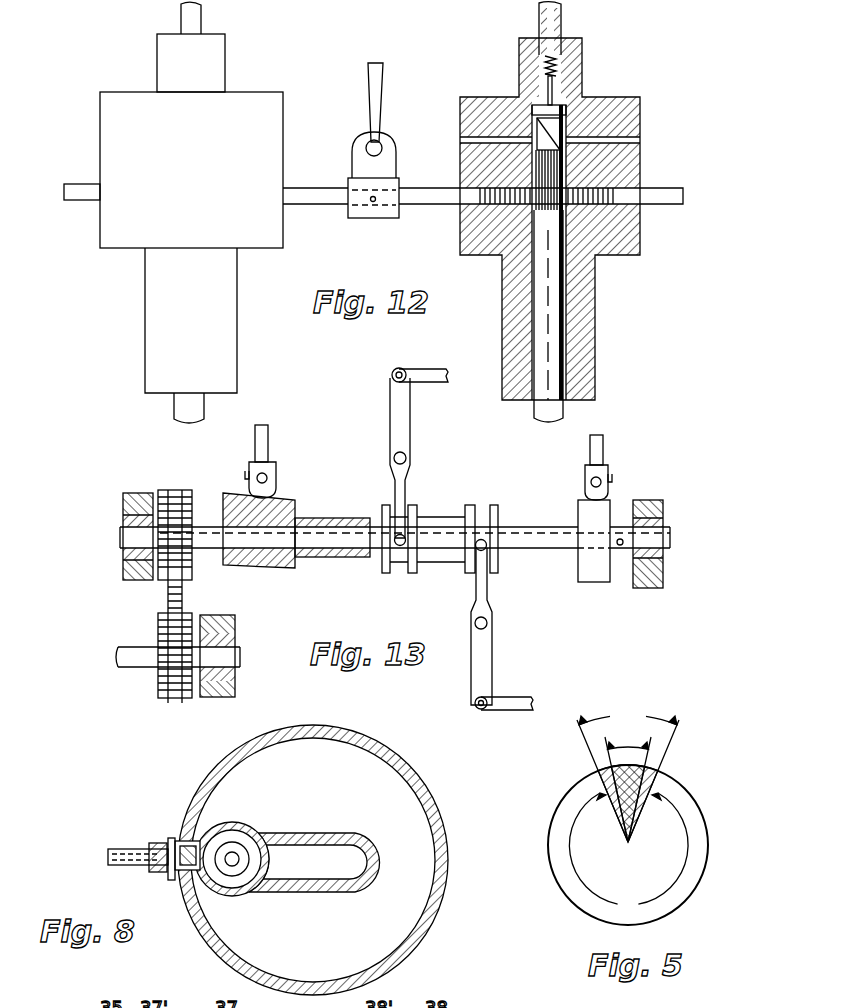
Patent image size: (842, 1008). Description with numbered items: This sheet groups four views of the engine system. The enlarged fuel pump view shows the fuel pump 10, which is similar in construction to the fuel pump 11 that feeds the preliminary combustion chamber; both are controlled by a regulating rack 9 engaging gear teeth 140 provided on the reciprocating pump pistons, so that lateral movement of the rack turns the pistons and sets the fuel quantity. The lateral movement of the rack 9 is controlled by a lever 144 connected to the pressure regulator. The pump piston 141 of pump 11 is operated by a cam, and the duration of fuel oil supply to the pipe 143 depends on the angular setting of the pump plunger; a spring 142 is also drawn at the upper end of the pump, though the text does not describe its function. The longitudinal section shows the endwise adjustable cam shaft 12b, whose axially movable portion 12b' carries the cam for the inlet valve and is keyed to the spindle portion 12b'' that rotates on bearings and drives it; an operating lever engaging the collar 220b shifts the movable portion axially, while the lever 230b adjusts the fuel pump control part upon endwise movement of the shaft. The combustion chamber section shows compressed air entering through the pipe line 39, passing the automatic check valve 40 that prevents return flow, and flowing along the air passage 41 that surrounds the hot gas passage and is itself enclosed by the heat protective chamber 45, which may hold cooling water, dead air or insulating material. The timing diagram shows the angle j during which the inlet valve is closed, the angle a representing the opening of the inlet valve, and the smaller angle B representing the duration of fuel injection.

In FIG. 12, the fuel pump 10 is at (253, 107).
In FIG. 12, the regulating rack 9 is at (320, 200).
In FIG. 12, the lever 144 is at (435, 82).
In FIG. 12, the pipe 143 is at (562, 22).
In FIG. 12, the spring 142 is at (576, 70).
In FIG. 12, the fuel pump 11 is at (641, 110).
In FIG. 12, the gear teeth 140 is at (566, 182).
In FIG. 12, the pump piston 141 is at (553, 302).
In FIG. 13, the cam shaft 12b is at (393, 564).
In FIG. 13, the spindle portion 12b'' is at (272, 554).
In FIG. 13, the axially movable portion 12b' is at (337, 561).
In FIG. 13, the lever 230b is at (403, 430).
In FIG. 13, the collar 220b is at (500, 510).
In FIG. 8, the heat protective chamber 45 is at (418, 852).
In FIG. 8, the air passage 41 is at (316, 852).
In FIG. 8, the automatic check valve 40 is at (229, 836).
In FIG. 8, the pipe line 39 is at (158, 880).
In FIG. 5, the angle j is at (628, 845).
In FIG. 5, the angle a is at (628, 775).
In FIG. 5, the angle B is at (628, 787).